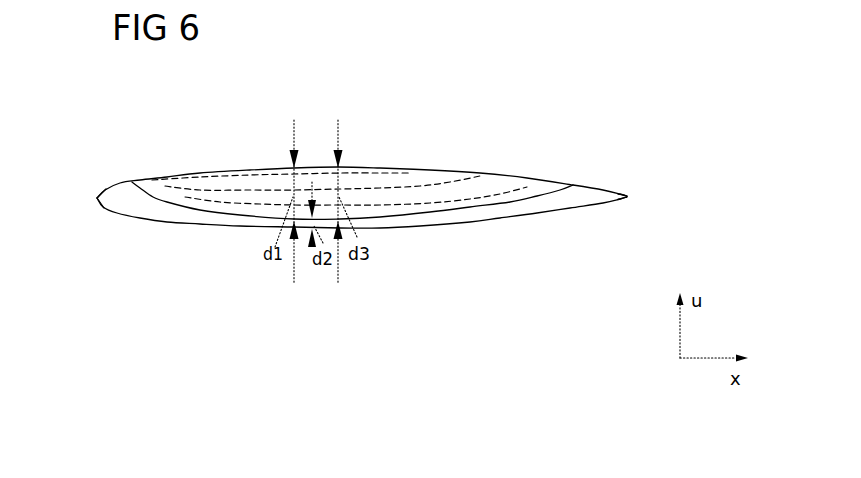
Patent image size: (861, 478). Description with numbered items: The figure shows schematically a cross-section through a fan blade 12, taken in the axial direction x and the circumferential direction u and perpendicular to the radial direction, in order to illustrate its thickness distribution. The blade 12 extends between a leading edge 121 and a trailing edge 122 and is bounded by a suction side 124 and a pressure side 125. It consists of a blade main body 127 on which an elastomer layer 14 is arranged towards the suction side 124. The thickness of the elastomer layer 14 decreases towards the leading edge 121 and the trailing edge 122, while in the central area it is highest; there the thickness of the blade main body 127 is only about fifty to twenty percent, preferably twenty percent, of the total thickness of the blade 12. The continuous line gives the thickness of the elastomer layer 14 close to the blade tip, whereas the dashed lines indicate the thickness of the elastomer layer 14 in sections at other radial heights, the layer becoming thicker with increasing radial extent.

The fan blade 12 is at (362, 194).
The elastomer layer 14 is at (428, 193).
The leading edge 121 is at (96, 198).
The trailing edge 122 is at (630, 193).
The suction side 124 is at (243, 168).
The pressure side 125 is at (245, 227).
The blade main body 127 is at (553, 210).